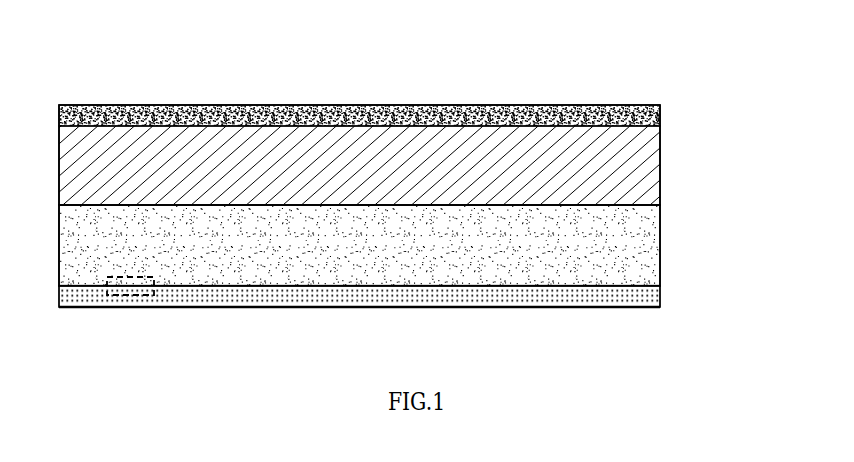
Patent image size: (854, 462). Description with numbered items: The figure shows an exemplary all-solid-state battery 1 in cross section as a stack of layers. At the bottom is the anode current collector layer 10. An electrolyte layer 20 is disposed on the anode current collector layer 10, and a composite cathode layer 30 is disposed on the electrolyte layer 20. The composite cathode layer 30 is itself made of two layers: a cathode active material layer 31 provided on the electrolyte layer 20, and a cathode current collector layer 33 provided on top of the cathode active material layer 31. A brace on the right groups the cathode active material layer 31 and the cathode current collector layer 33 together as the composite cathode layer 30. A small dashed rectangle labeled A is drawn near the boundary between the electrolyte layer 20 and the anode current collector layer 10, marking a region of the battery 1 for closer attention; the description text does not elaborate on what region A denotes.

The all-solid-state battery 1 is at (74, 76).
The anode current collector layer 10 is at (650, 296).
The electrolyte layer 20 is at (650, 250).
The composite cathode layer 30 is at (740, 93).
The cathode active material layer 31 is at (648, 178).
The cathode current collector layer 33 is at (662, 112).
The enlarged region A is at (130, 295).